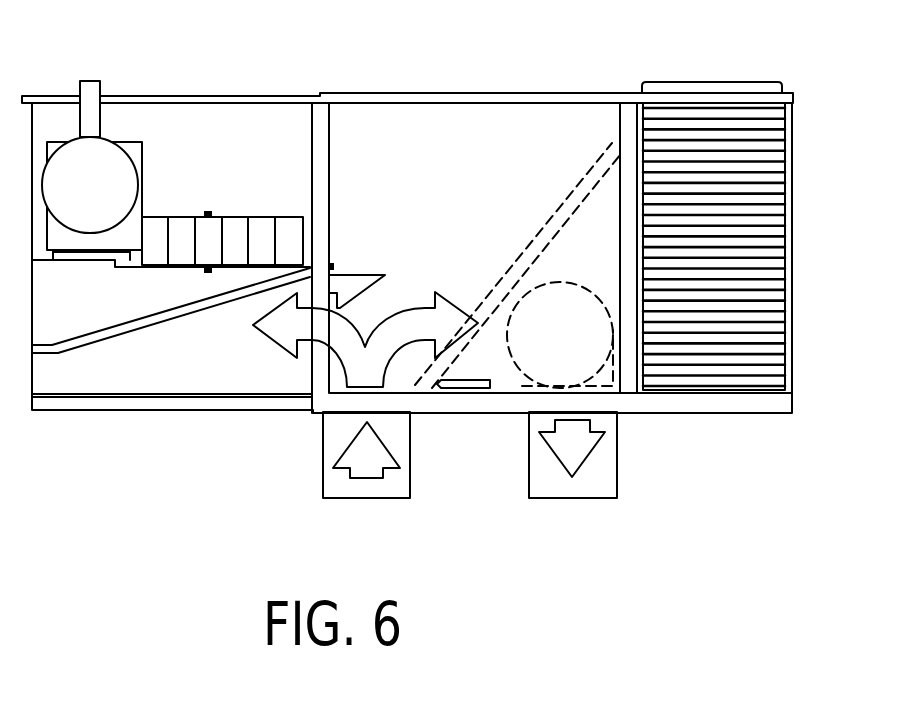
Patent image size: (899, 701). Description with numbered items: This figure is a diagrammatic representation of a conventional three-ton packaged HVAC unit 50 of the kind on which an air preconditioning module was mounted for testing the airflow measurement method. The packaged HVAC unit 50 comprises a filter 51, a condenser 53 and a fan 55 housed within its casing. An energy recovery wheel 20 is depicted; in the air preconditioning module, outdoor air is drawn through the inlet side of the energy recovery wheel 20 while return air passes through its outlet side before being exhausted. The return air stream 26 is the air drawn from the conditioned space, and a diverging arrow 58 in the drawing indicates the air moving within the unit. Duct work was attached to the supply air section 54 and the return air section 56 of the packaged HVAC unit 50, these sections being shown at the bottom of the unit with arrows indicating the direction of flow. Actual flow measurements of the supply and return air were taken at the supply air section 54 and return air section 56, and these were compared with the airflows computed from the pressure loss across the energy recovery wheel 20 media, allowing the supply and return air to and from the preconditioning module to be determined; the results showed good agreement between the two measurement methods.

The packaged HVAC unit 50 is at (443, 93).
The energy recovery wheel 20 is at (232, 230).
The filter 51 is at (122, 338).
The return air stream 26 is at (281, 343).
The air flow path 58 is at (387, 358).
The fan 55 is at (517, 368).
The condenser 53 is at (792, 282).
The return air section 56 is at (367, 499).
The supply air section 54 is at (575, 499).